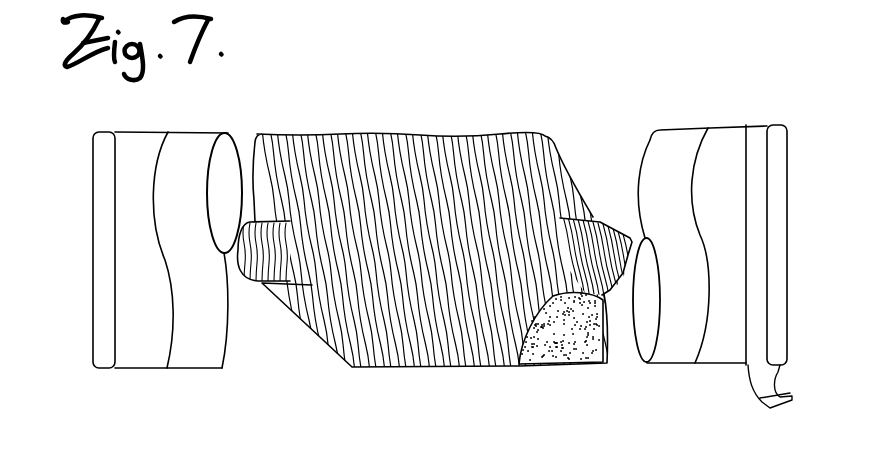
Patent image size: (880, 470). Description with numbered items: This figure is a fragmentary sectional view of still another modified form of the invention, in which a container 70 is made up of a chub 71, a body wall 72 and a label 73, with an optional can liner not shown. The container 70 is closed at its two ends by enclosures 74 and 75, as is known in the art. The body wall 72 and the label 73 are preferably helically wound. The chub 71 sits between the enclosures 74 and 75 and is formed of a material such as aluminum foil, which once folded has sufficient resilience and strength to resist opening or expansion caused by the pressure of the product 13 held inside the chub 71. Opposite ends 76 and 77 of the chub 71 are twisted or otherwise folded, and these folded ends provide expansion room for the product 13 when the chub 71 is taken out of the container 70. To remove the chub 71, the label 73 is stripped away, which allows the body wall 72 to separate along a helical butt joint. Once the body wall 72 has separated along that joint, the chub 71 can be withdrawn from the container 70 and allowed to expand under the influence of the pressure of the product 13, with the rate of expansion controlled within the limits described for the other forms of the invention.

The container 70 is at (386, 110).
The chub 71 is at (468, 136).
The body wall 72 is at (210, 132).
The label 73 is at (143, 132).
The enclosure 74 is at (95, 207).
The enclosure 75 is at (788, 208).
The end of chub 76 is at (262, 284).
The end of chub 77 is at (617, 230).
The product 13 is at (576, 348).